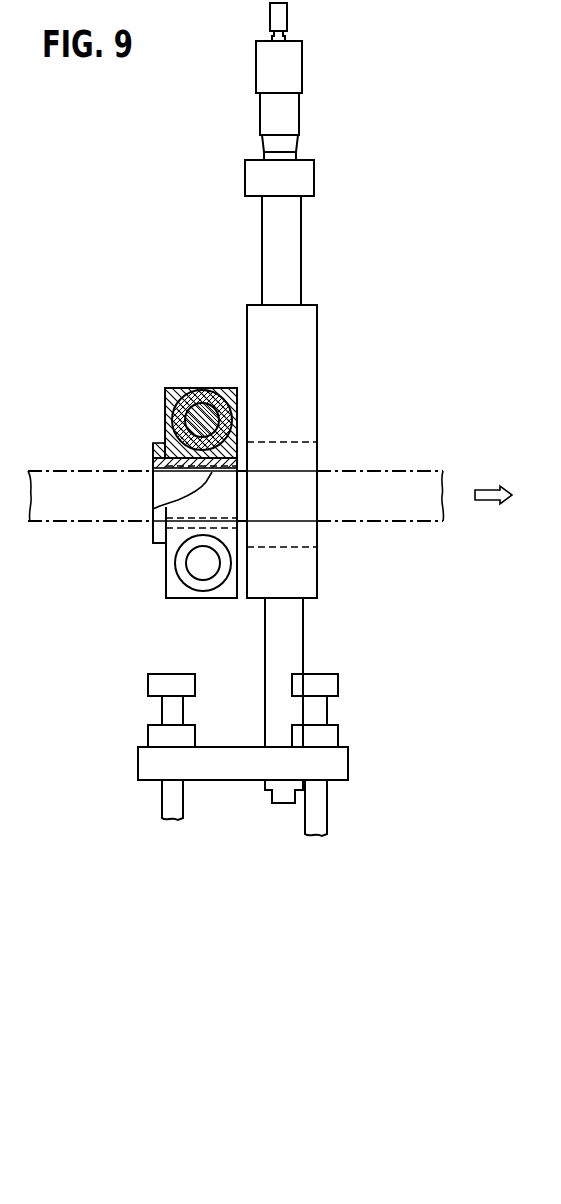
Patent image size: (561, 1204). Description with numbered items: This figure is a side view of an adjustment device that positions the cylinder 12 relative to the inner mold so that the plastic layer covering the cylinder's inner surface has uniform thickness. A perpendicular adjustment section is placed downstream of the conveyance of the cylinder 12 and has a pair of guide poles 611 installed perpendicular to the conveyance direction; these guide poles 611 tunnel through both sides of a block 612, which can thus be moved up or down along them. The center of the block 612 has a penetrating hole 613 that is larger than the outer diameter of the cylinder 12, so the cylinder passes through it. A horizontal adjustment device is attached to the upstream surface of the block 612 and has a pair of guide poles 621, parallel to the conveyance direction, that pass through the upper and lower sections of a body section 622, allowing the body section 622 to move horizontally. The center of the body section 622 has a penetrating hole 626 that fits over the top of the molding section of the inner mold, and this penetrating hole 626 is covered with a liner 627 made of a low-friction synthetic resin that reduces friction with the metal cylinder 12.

The cylinder 12 is at (50, 470).
The guide poles 611 is at (292, 255).
The block 612 is at (303, 338).
The penetrating hole 613 is at (318, 444).
The guide poles 621 is at (199, 412).
The body section 622 is at (168, 388).
The penetrating hole 626 is at (156, 460).
The liner 627 is at (158, 534).